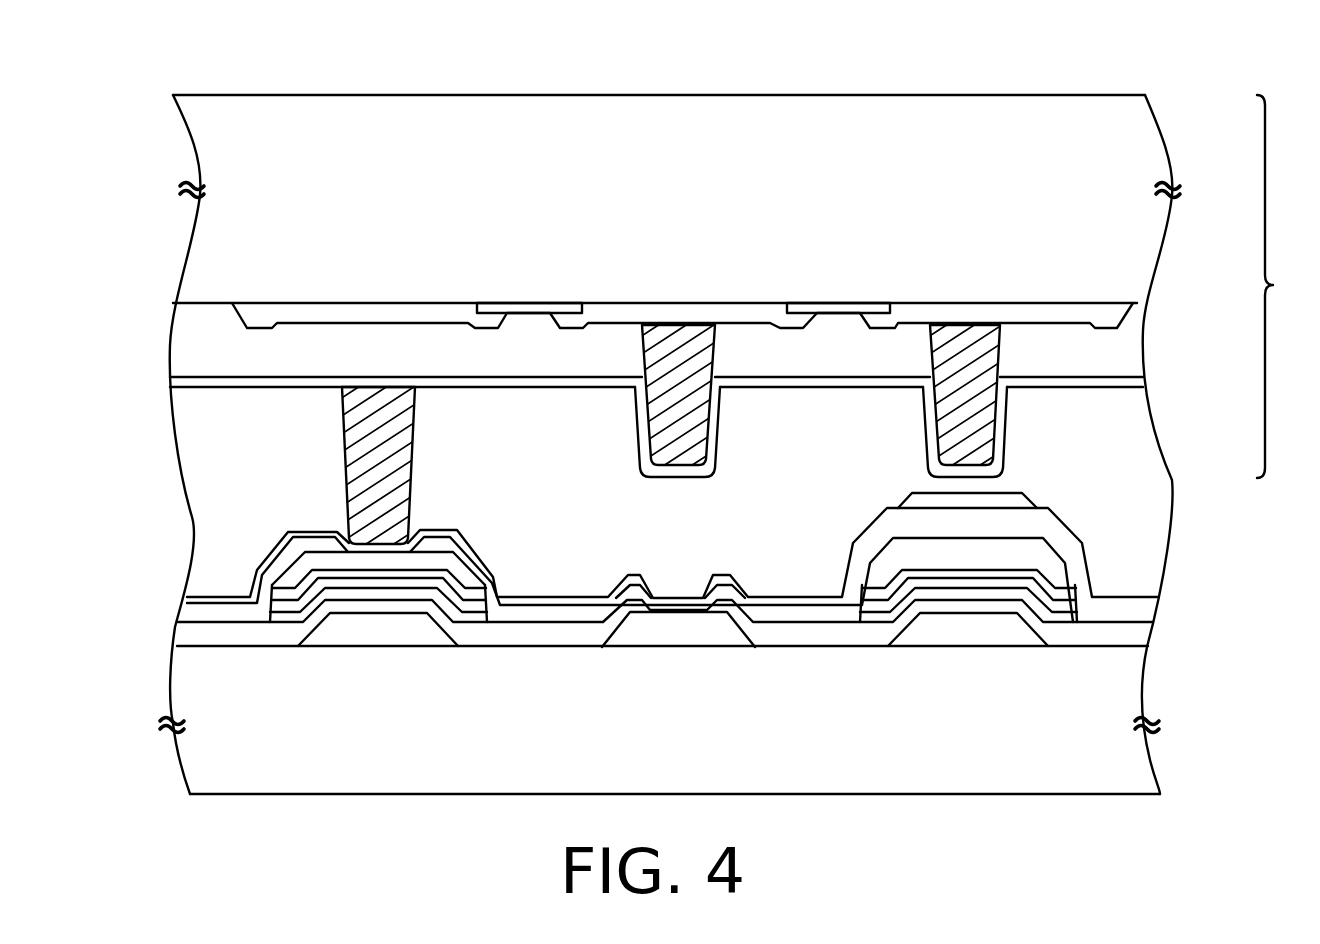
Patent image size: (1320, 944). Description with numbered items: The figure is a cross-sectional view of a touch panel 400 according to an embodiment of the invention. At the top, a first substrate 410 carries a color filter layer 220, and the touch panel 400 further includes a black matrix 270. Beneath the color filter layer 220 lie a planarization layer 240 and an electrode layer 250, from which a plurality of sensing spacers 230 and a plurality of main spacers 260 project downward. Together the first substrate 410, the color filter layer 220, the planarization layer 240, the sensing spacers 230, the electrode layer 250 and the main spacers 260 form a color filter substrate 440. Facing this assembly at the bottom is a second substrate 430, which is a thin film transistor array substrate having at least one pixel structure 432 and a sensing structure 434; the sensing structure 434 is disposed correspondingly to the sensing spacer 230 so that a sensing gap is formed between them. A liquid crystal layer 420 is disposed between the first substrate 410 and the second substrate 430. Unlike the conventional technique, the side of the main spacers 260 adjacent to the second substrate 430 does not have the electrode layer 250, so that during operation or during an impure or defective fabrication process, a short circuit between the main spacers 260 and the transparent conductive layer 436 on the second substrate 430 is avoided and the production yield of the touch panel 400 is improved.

The touch panel 400 is at (1305, 848).
The first substrate 410 is at (1142, 244).
The color filter substrate 440 is at (1288, 286).
The color filter layer 220 is at (1166, 309).
The black matrix 270 is at (822, 303).
The planarization layer 240 is at (1133, 367).
The electrode layer 250 is at (1137, 382).
The sensing spacer 230 is at (1000, 425).
The main spacer 260 is at (357, 423).
The transparent conductive layer 436 is at (282, 546).
The sensing structure 434 is at (1017, 500).
The liquid crystal layer 420 is at (1137, 572).
The pixel structure 432 is at (1125, 668).
The second substrate 430 is at (1112, 697).